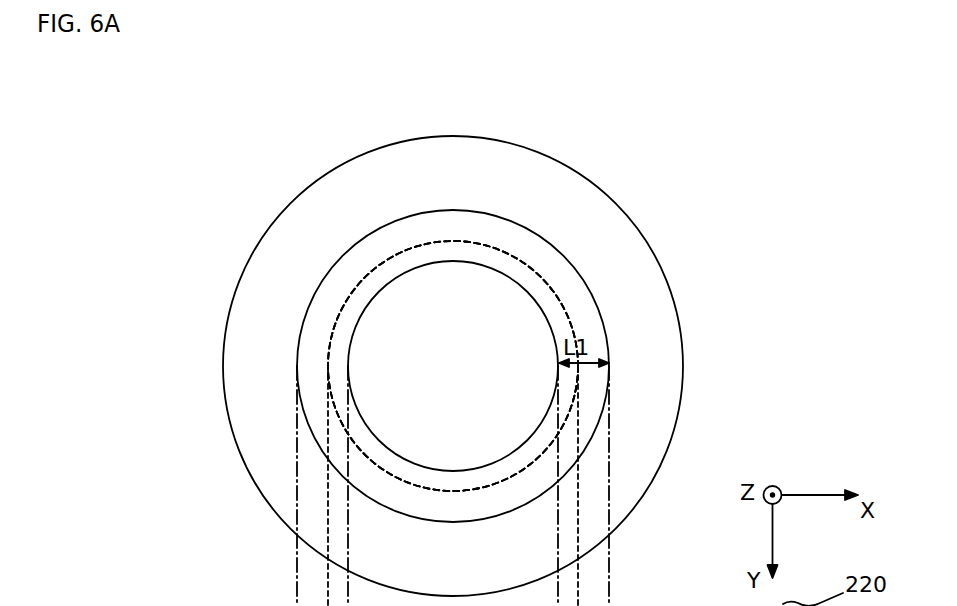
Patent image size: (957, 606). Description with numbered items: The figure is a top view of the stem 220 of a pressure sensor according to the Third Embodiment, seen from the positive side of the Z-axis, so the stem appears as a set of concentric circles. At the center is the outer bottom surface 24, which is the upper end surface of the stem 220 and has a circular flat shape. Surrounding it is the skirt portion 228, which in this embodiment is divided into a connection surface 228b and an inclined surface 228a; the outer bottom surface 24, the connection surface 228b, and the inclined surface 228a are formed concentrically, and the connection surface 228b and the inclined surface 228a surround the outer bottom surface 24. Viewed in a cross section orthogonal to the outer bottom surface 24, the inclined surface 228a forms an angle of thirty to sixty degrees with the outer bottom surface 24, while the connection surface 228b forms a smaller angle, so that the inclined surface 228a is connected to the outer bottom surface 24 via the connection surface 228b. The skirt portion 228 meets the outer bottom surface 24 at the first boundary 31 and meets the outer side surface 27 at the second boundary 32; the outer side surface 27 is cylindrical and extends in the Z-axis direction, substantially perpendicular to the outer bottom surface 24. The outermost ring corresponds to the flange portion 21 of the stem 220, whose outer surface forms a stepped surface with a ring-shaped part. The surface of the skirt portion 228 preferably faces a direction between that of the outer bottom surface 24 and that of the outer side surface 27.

The stem 220 is at (664, 78).
The flange portion 21 is at (568, 207).
The outer bottom surface 24 is at (452, 300).
The outer side surface 27 is at (377, 231).
The skirt portion 228 is at (775, 253).
The inclined surface 228a is at (582, 320).
The connection surface 228b is at (537, 288).
The second boundary 32 is at (609, 363).
The first boundary 31 is at (559, 366).